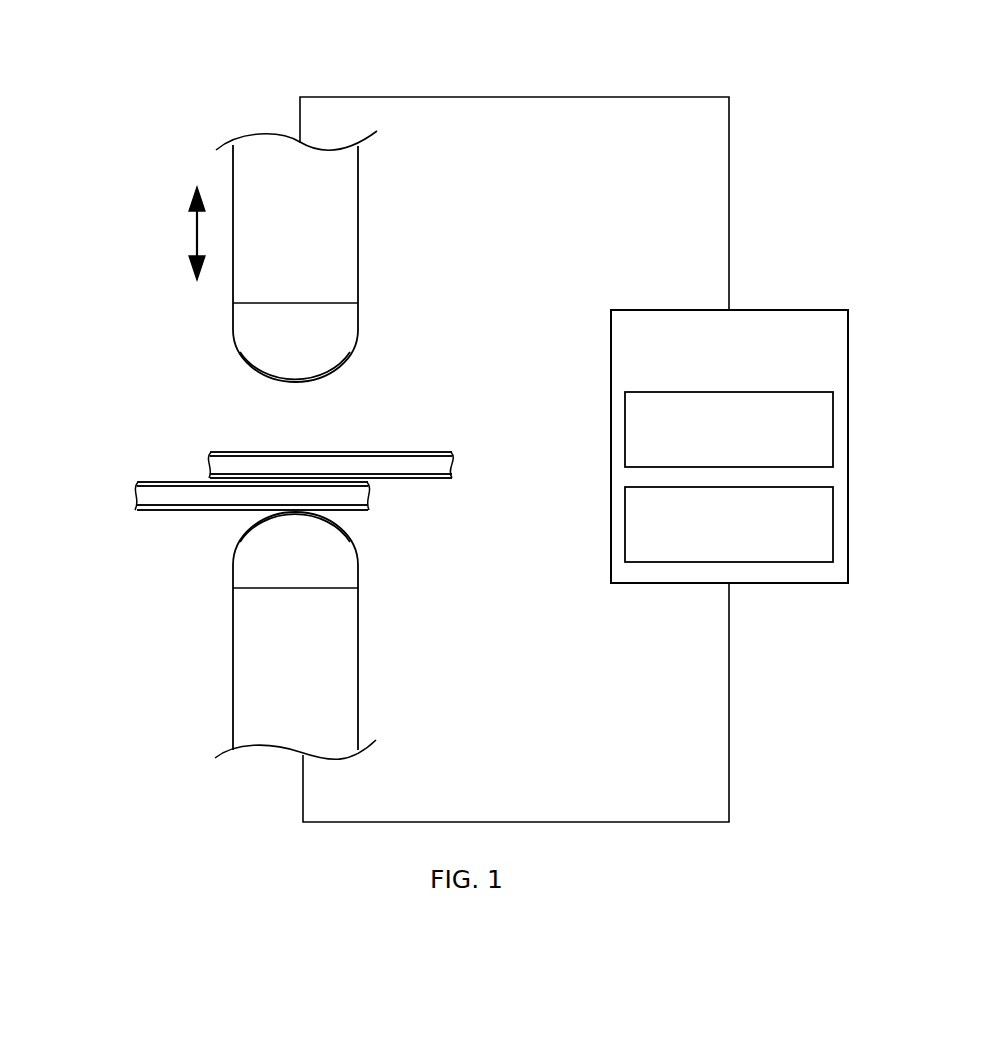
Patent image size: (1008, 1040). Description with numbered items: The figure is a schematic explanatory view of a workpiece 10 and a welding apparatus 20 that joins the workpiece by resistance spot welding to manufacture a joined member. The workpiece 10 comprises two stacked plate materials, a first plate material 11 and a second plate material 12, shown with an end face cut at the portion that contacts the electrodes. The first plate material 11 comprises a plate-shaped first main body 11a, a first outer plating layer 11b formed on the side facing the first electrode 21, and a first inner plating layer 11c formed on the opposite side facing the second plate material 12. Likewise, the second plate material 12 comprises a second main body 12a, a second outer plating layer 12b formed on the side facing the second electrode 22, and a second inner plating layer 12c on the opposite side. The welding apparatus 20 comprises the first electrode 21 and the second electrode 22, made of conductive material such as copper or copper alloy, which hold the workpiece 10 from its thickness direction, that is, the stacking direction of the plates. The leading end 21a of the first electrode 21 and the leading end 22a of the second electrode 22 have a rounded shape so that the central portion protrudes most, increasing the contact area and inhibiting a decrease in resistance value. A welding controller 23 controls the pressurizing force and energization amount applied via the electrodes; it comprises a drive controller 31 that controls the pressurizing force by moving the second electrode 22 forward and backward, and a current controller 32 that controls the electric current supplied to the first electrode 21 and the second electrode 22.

The workpiece 10 is at (292, 417).
The first plate material 11 is at (175, 482).
The first main body 11a is at (137, 492).
The first outer plating layer 11b is at (133, 508).
The first inner plating layer 11c is at (137, 481).
The second plate material 12 is at (372, 452).
The second main body 12a is at (440, 468).
The second outer plating layer 12b is at (437, 453).
The second inner plating layer 12c is at (446, 478).
The welding apparatus 20 is at (775, 123).
The first electrode 21 is at (256, 723).
The leading end of the first electrode 21a is at (310, 522).
The second electrode 22 is at (281, 150).
The leading end of the second electrode 22a is at (297, 376).
The welding controller 23 is at (766, 310).
The drive controller 31 is at (835, 424).
The current controller 32 is at (835, 516).